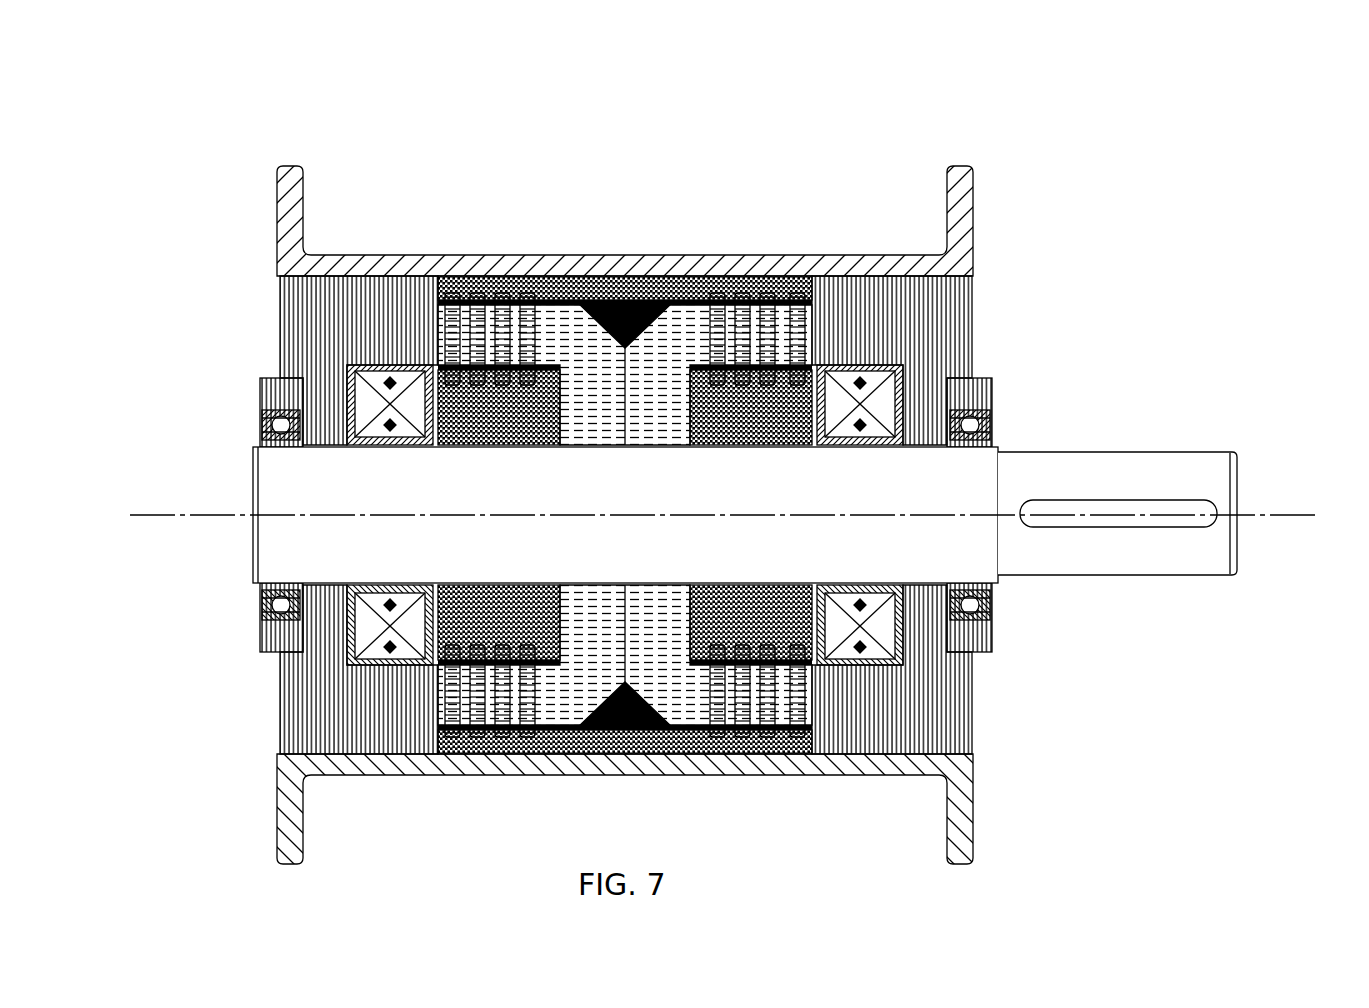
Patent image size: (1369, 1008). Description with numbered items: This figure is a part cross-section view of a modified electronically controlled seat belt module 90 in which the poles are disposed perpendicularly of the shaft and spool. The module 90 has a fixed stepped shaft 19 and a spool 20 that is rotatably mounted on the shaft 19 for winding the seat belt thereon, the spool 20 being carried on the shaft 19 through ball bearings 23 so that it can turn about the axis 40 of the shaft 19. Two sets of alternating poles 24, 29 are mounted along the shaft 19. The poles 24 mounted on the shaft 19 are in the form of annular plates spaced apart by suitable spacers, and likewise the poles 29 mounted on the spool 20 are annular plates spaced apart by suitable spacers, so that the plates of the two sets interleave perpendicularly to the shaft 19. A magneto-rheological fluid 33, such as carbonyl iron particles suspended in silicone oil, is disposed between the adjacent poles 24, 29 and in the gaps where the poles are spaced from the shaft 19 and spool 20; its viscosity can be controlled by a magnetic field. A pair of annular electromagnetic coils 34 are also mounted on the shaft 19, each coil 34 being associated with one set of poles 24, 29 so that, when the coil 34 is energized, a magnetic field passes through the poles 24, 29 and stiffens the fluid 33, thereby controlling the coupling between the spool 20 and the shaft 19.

The fixed stepped shaft 19 is at (1110, 548).
The spool 20 is at (730, 767).
The ball bearing 23 is at (260, 438).
The poles 24 is at (453, 325).
The poles 29 is at (487, 307).
The magneto-rheological fluid 33 is at (467, 337).
The electromagnetic coil 34 is at (367, 398).
The axis 40 is at (197, 517).
The module 90 is at (702, 469).